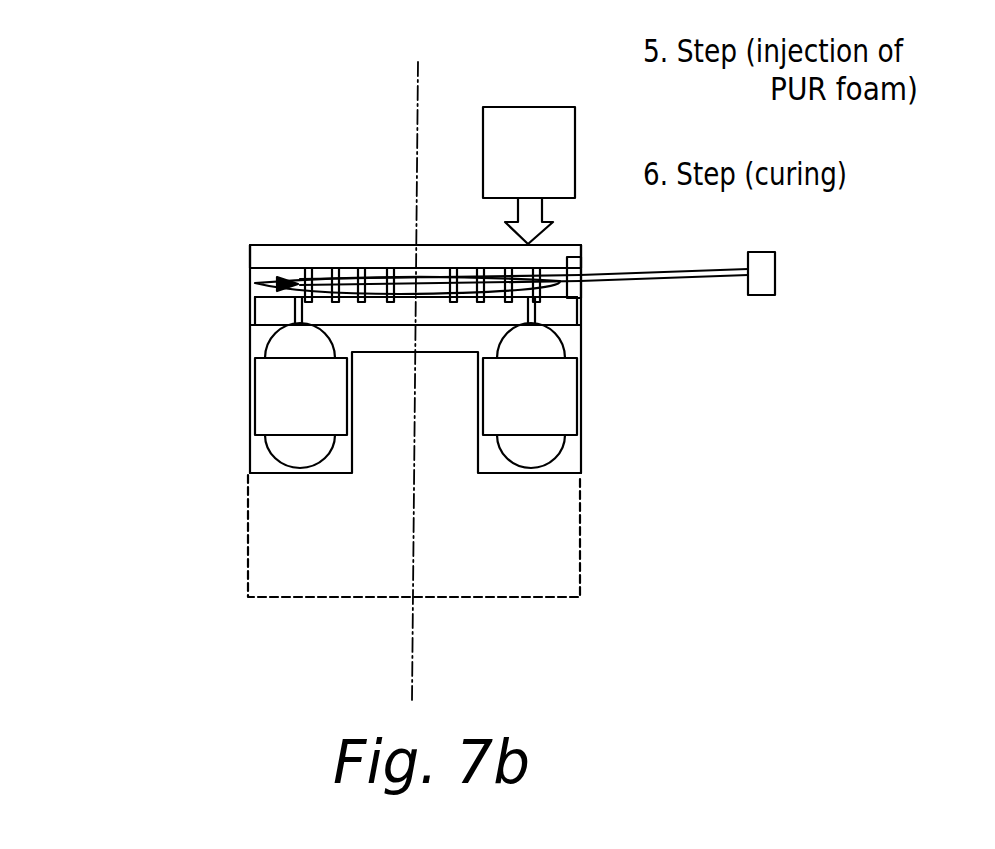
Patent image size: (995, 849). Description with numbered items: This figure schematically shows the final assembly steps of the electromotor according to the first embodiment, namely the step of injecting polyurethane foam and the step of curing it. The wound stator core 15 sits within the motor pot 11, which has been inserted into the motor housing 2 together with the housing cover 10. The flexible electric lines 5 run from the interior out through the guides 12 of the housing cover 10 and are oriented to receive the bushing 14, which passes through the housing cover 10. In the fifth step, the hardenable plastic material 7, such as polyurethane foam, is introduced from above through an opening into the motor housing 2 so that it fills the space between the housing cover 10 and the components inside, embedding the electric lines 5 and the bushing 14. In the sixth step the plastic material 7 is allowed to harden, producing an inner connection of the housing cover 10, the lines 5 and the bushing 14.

The motor housing 2 is at (232, 430).
The flexible electric lines 5 is at (650, 273).
The hardenable plastic material 7 is at (527, 157).
The housing cover 10 is at (282, 258).
The motor pot 11 is at (568, 458).
The guides 12 is at (277, 284).
The bushing 14 is at (577, 287).
The wound stator core 15 is at (545, 400).